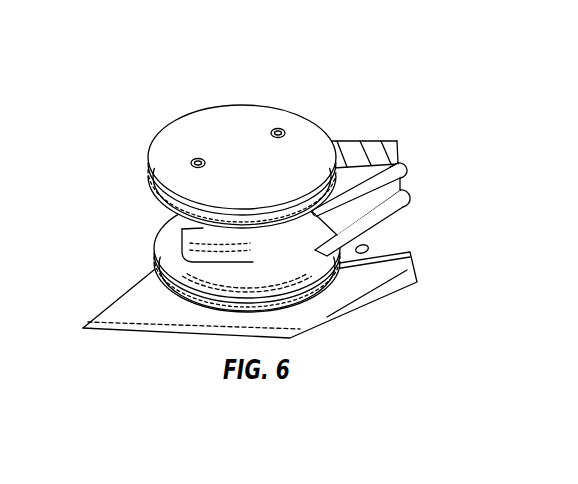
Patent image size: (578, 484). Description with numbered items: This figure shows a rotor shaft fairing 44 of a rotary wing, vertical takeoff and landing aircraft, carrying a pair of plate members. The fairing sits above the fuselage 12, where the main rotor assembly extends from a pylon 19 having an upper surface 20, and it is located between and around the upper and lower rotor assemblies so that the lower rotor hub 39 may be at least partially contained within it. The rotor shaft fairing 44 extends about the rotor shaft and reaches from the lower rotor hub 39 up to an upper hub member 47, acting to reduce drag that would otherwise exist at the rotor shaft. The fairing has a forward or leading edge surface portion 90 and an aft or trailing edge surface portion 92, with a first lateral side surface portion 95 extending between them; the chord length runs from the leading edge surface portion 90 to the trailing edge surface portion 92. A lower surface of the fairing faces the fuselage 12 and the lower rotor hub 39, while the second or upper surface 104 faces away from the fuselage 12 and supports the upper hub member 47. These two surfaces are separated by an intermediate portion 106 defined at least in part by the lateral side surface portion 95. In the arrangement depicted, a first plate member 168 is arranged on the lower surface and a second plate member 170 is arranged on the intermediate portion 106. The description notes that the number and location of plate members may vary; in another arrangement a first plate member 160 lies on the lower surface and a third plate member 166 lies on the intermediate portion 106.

The fuselage 12 is at (245, 310).
The pylon 19 is at (122, 292).
The upper surface 20 is at (276, 276).
The lower rotor hub 39 is at (290, 297).
The rotor shaft fairing 44 is at (298, 259).
The upper hub member 47 is at (166, 152).
The leading edge surface portion 90 is at (200, 227).
The trailing edge surface portion 92 is at (414, 160).
The first lateral side surface portion 95 is at (407, 158).
The second or upper surface 104 is at (374, 144).
The intermediate portion 106 is at (238, 243).
The first plate member 160 is at (410, 211).
The third plate member 166 is at (420, 175).
The first plate member 168 is at (419, 190).
The second plate member 170 is at (418, 168).